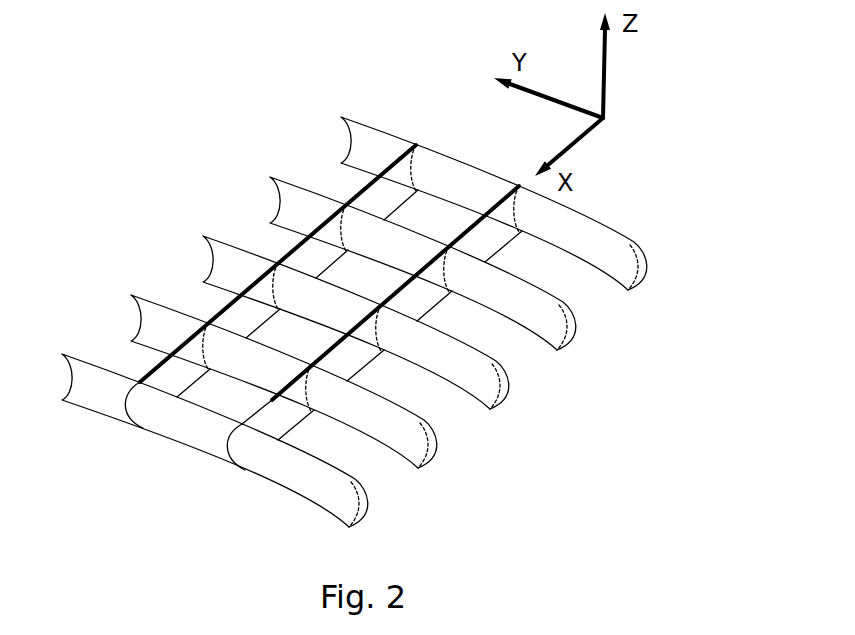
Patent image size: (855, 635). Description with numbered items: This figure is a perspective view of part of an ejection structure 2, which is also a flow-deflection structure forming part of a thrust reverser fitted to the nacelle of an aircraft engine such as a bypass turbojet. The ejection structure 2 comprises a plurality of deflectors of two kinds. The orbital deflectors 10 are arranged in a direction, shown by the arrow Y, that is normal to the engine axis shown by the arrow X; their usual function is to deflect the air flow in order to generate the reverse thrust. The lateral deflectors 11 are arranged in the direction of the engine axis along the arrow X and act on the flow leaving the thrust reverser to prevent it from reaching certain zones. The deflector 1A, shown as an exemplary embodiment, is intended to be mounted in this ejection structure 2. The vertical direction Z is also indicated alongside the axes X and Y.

The ejection structure 2 is at (246, 170).
The orbital deflectors 10 is at (460, 368).
The lateral deflectors 11 is at (238, 313).
The deflector 1A is at (185, 332).